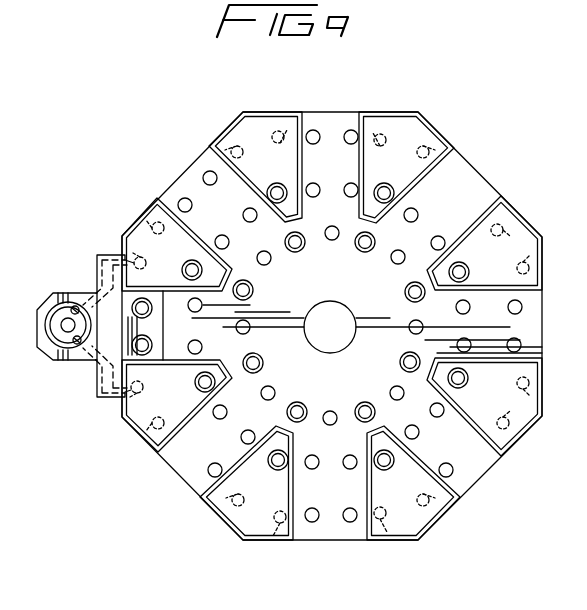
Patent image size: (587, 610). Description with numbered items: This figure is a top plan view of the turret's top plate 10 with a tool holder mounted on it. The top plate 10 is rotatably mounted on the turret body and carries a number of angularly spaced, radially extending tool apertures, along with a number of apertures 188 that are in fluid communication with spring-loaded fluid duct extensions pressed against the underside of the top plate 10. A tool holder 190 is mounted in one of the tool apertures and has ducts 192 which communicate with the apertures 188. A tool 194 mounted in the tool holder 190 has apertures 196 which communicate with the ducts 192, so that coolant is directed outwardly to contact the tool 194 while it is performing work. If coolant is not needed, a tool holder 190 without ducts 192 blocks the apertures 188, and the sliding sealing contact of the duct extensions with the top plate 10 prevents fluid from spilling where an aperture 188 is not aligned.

The top plate 10 is at (305, 67).
The apertures 188 is at (380, 519).
The tool holder 190 is at (72, 294).
The ducts 192 is at (119, 396).
The tool 194 is at (69, 333).
The apertures 196 is at (86, 310).